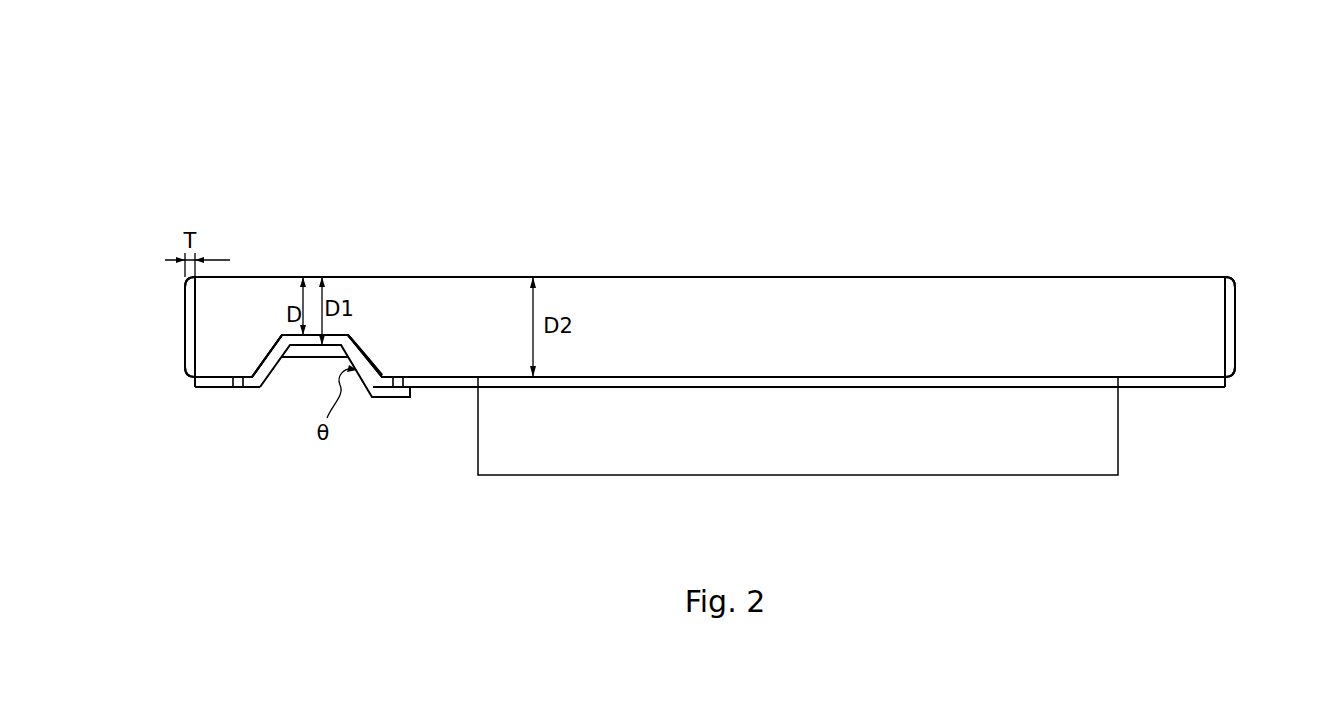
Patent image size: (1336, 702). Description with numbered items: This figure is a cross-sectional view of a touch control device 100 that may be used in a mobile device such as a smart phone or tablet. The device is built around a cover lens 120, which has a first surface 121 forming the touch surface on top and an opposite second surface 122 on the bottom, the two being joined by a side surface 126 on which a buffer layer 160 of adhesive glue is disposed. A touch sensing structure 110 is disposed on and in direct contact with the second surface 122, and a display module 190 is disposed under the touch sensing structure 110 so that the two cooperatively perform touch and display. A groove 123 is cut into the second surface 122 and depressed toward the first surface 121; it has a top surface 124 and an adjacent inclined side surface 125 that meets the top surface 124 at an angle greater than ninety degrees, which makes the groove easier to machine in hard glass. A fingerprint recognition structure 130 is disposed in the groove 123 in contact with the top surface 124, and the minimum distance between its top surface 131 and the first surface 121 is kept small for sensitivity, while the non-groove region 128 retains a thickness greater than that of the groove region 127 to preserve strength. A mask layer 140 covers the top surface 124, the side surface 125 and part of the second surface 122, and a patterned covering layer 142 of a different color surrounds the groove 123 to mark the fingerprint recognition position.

The touch control device 100 is at (648, 138).
The touch sensing structure 110 is at (662, 382).
The cover lens 120 is at (532, 147).
The first surface 121 is at (320, 277).
The second surface 122 is at (218, 367).
The groove 123 is at (477, 198).
The top surface 124 is at (342, 335).
The side surface 125 is at (370, 360).
The side surface 126 is at (197, 290).
The groove region 127 is at (272, 340).
The non-groove region 128 is at (445, 377).
The fingerprint recognition structure 130 is at (302, 358).
The top surface 131 is at (313, 352).
The mask layer 140 is at (423, 388).
The patterned covering layer 142 is at (235, 382).
The buffer layer 160 is at (185, 320).
The display module 190 is at (788, 448).